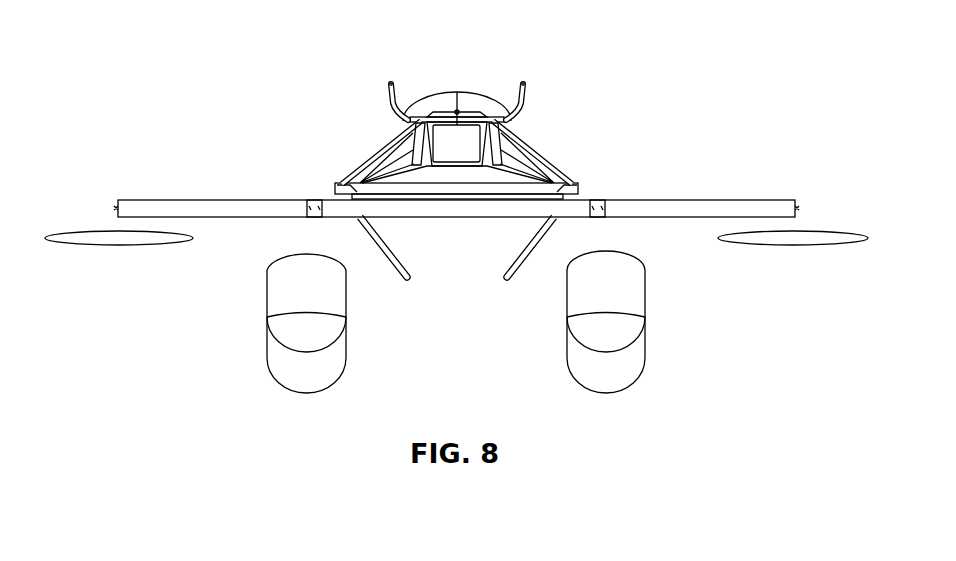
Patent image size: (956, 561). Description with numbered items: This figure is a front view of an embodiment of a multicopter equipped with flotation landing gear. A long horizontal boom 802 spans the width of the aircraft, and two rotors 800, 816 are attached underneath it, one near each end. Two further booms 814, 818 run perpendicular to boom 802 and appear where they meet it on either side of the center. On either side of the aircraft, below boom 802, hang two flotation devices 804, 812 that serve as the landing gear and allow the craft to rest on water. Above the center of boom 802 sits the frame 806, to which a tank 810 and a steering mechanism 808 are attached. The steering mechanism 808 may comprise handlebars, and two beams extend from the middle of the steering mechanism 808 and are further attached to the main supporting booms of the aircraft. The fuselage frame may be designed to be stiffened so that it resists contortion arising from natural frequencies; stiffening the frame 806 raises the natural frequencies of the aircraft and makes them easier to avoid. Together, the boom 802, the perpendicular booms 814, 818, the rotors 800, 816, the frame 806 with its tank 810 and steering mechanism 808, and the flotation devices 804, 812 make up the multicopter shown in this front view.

The rotor 800 is at (82, 230).
The boom 802 is at (203, 218).
The flotation device 804 is at (266, 340).
The frame 806 is at (372, 157).
The steering mechanism 808 is at (385, 98).
The tank 810 is at (477, 90).
The flotation device 812 is at (565, 342).
The boom 814 is at (312, 200).
The rotor 816 is at (827, 230).
The boom 818 is at (600, 200).